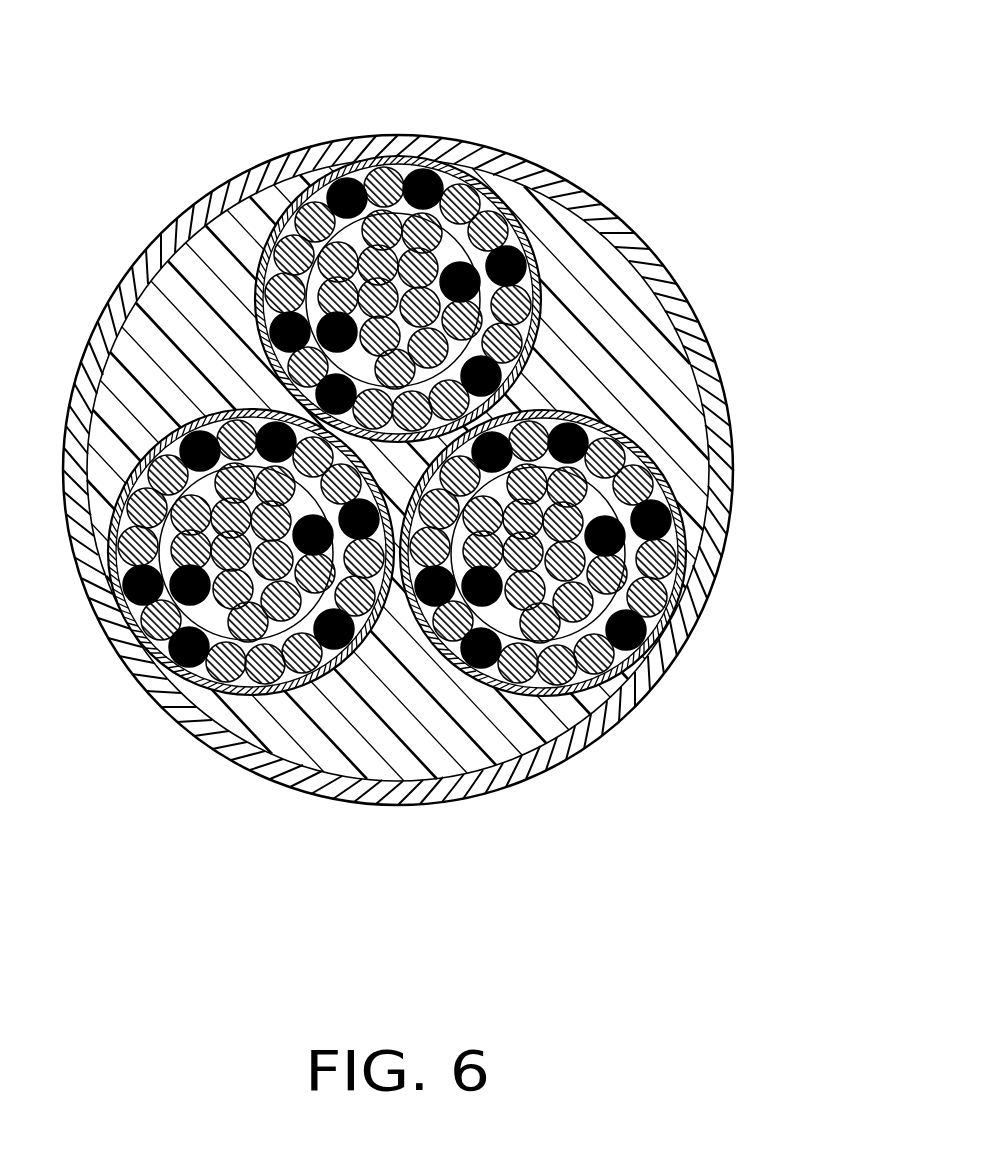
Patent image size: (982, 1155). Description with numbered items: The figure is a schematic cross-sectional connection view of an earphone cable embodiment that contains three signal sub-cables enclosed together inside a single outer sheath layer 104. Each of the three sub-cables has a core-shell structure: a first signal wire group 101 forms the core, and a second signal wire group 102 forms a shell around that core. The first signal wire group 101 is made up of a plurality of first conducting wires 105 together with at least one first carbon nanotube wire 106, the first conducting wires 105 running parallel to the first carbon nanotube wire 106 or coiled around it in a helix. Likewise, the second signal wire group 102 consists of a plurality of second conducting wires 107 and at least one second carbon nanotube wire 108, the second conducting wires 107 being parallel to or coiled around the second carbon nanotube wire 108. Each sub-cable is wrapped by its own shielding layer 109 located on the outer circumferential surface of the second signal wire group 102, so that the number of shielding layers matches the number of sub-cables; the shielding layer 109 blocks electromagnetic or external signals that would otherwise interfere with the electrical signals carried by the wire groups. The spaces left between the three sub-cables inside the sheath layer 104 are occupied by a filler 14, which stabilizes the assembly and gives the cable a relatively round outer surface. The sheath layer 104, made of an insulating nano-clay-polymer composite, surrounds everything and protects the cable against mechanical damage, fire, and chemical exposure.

The filler 14 is at (407, 708).
The first signal wire group 101 is at (523, 288).
The second signal wire group 102 is at (529, 260).
The sheath layer 104 is at (388, 148).
The first conducting wires 105 is at (484, 289).
The first carbon nanotube wire 106 is at (496, 291).
The second conducting wires 107 is at (529, 299).
The second carbon nanotube wire 108 is at (540, 380).
The shielding layer 109 is at (356, 256).